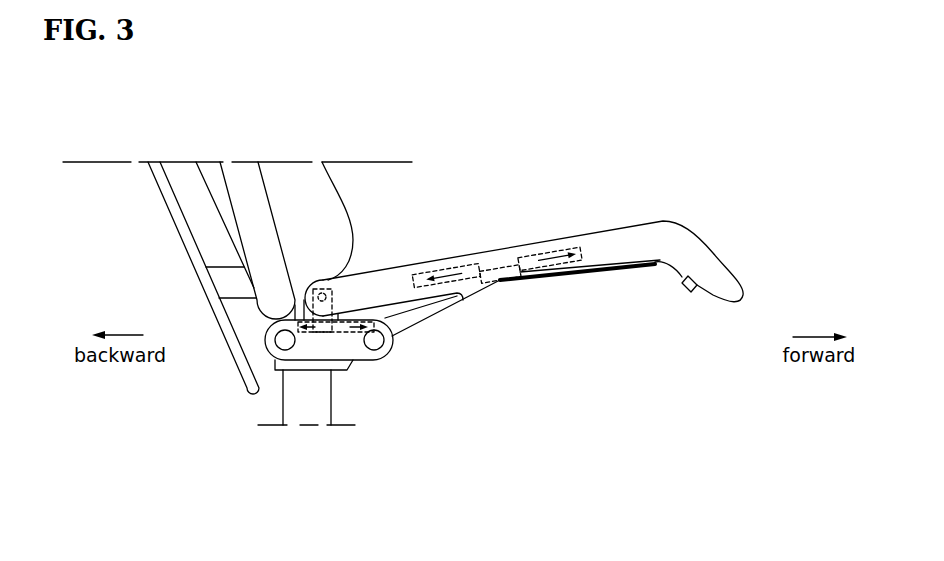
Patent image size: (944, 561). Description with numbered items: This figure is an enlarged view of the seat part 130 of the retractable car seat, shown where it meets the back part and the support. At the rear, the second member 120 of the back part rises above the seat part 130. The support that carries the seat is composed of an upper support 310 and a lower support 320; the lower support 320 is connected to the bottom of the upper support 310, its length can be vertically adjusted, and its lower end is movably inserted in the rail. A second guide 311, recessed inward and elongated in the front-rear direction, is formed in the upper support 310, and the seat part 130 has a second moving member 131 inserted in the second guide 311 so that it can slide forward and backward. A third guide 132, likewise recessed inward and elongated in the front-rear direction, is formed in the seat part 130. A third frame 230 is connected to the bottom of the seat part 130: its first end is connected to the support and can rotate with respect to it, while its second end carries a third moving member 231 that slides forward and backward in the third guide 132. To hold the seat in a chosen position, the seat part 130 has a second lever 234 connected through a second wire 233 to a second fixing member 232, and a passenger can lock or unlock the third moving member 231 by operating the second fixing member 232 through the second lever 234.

The second member 120 is at (245, 170).
The seat part 130 is at (608, 230).
The second moving member 131 is at (327, 289).
The third guide 132 is at (575, 278).
The third frame 230 is at (423, 318).
The third moving member 231 is at (510, 283).
The second fixing member 232 is at (500, 278).
The second wire 233 is at (660, 265).
The second lever 234 is at (692, 278).
The upper support 310 is at (308, 348).
The second guide 311 is at (352, 348).
The lower support 320 is at (292, 403).